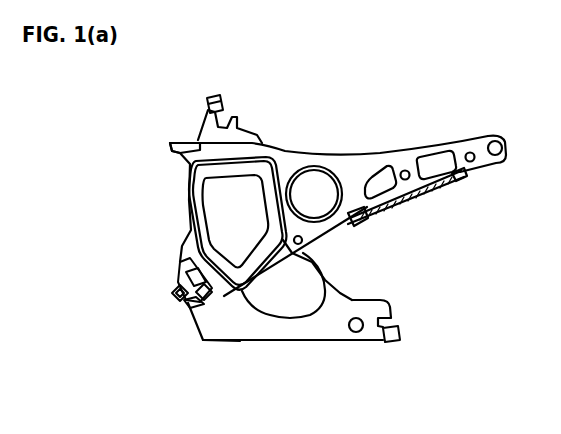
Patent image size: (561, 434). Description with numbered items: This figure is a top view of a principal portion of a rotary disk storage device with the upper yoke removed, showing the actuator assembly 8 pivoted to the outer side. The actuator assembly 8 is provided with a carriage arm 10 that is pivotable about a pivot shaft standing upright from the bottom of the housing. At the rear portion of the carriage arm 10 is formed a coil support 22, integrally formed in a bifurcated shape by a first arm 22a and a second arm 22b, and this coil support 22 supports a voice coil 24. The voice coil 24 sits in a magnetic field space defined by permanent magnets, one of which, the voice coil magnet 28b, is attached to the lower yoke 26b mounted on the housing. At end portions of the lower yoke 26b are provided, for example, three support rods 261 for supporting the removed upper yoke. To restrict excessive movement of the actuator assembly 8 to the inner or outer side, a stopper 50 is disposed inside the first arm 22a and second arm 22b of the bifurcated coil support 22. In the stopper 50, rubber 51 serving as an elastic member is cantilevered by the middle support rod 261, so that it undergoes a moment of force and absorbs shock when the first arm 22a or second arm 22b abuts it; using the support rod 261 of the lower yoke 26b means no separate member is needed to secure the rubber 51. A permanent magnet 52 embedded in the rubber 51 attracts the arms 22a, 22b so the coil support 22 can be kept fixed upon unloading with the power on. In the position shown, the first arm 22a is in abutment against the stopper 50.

The actuator assembly 8 is at (339, 99).
The carriage arm 10 is at (414, 147).
The coil support 22 is at (147, 151).
The first arm 22a is at (207, 308).
The second arm 22b is at (173, 140).
The voice coil 24 is at (191, 198).
The lower yoke 26b is at (300, 327).
The voice coil magnet 28b is at (305, 281).
The stopper 50 is at (172, 290).
The rubber 51 is at (183, 307).
The permanent magnet 52 is at (178, 246).
The support rod 261 is at (213, 93).